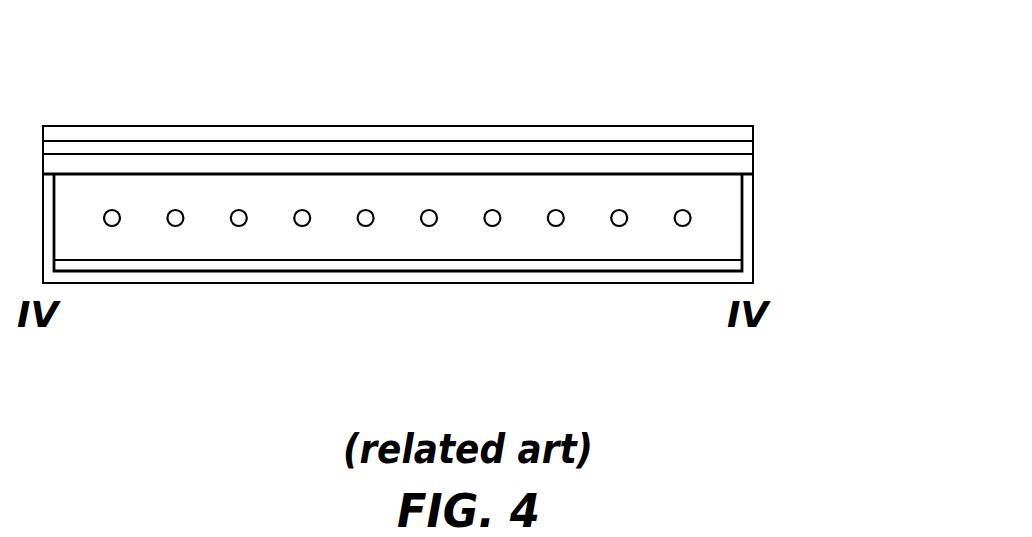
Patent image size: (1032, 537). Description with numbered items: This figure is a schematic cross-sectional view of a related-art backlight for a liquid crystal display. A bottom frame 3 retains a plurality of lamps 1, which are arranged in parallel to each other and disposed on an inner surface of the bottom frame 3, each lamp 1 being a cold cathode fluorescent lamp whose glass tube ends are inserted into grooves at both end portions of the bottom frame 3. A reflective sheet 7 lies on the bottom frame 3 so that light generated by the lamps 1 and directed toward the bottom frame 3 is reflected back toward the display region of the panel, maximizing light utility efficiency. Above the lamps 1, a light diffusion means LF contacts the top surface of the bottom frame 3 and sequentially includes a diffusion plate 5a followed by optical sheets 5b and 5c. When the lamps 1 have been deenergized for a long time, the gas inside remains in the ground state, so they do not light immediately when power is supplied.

The lamp 1 is at (112, 227).
The bottom frame 3 is at (753, 248).
The diffusion plate 5a is at (753, 163).
The optical sheet 5b is at (753, 145).
The optical sheet 5c is at (753, 127).
The diffusion means LF is at (867, 43).
The reflective sheet 7 is at (457, 263).